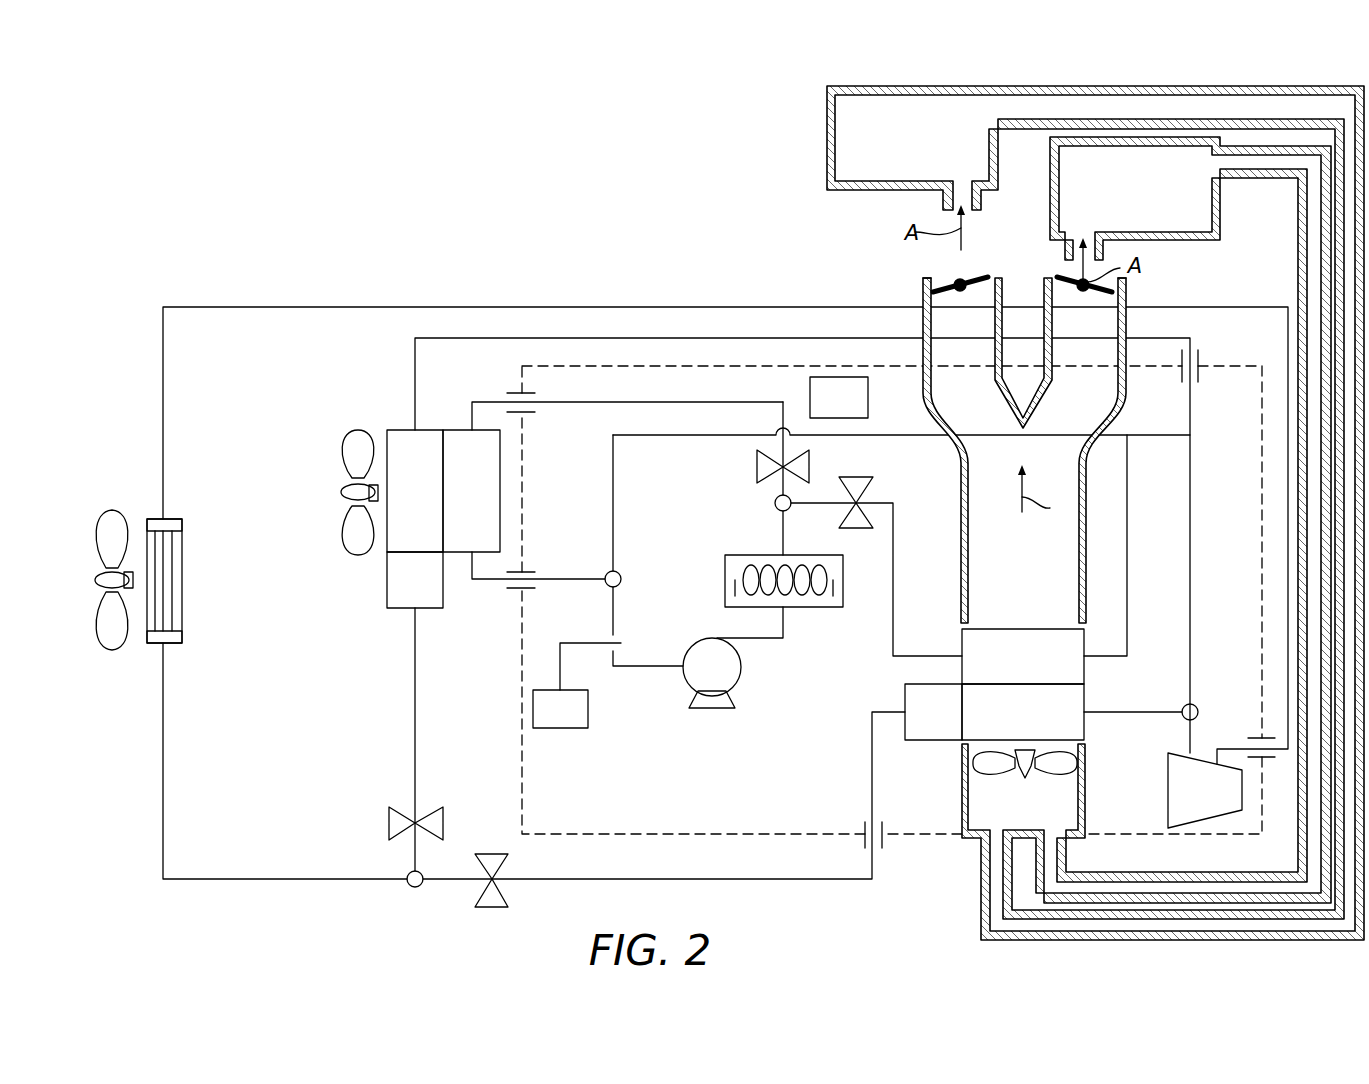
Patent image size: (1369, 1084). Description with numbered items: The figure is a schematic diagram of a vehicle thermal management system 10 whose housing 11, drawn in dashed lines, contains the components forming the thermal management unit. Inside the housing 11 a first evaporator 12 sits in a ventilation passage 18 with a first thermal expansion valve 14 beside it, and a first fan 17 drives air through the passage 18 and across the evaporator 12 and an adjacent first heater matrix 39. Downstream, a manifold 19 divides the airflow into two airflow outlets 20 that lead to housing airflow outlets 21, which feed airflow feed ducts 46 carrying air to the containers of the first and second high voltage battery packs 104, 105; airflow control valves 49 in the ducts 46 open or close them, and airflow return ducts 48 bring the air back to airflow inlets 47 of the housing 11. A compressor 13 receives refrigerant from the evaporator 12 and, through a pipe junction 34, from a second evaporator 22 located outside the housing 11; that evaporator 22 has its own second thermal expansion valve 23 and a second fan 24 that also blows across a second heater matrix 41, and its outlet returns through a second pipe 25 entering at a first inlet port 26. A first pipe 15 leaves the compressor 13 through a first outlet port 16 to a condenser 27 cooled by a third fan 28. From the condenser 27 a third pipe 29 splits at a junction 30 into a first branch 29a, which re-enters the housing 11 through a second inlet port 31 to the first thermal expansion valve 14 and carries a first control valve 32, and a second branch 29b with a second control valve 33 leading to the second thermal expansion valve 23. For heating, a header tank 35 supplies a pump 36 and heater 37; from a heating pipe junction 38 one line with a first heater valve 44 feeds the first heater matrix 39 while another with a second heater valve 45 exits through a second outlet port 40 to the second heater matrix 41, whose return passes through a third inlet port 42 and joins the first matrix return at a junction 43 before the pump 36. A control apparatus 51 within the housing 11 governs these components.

The thermal management system 10 is at (150, 203).
The housing 11 is at (654, 832).
The first evaporator 12 is at (1010, 724).
The compressor 13 is at (1190, 802).
The first thermal expansion valve 14 is at (920, 724).
The first pipe 15 is at (298, 306).
The first outlet port 16 is at (1248, 738).
The first fan 17 is at (990, 770).
The ventilation passage 18 is at (970, 570).
The manifold 19 is at (1120, 412).
The airflow outlets 20 is at (932, 380).
The housing airflow outlets 21 is at (922, 350).
The second evaporator 22 is at (402, 504).
The second thermal expansion valve 23 is at (402, 592).
The second fan 24 is at (342, 452).
The second pipe 25 is at (616, 336).
The first inlet port 26 is at (1200, 358).
The condenser 27 is at (152, 518).
The third fan 28 is at (96, 536).
The third pipe 29 is at (286, 881).
The first branch 29a is at (805, 881).
The second branch 29b is at (413, 700).
The junction 30 is at (415, 887).
The second inlet port 31 is at (884, 842).
The first control valve 32 is at (492, 853).
The second control valve 33 is at (388, 825).
The pipe junction 34 is at (1184, 706).
The header tank 35 is at (547, 722).
The pump 36 is at (740, 676).
The heater 37 is at (820, 608).
The heating pipe junction 38 is at (774, 505).
The first heater matrix 39 is at (1010, 669).
The second outlet port 40 is at (532, 414).
The second heater matrix 41 is at (459, 504).
The third inlet port 42 is at (532, 570).
The junction 43 is at (622, 580).
The first heater valve 44 is at (873, 483).
The second heater valve 45 is at (754, 470).
The airflow feed ducts 46 is at (922, 292).
The airflow inlets 47 is at (1053, 830).
The airflow return ducts 48 is at (1262, 86).
The airflow control valves 49 is at (1060, 282).
The control apparatus 51 is at (826, 410).
The first high voltage battery pack 104 is at (893, 148).
The second high voltage battery pack 105 is at (1116, 198).